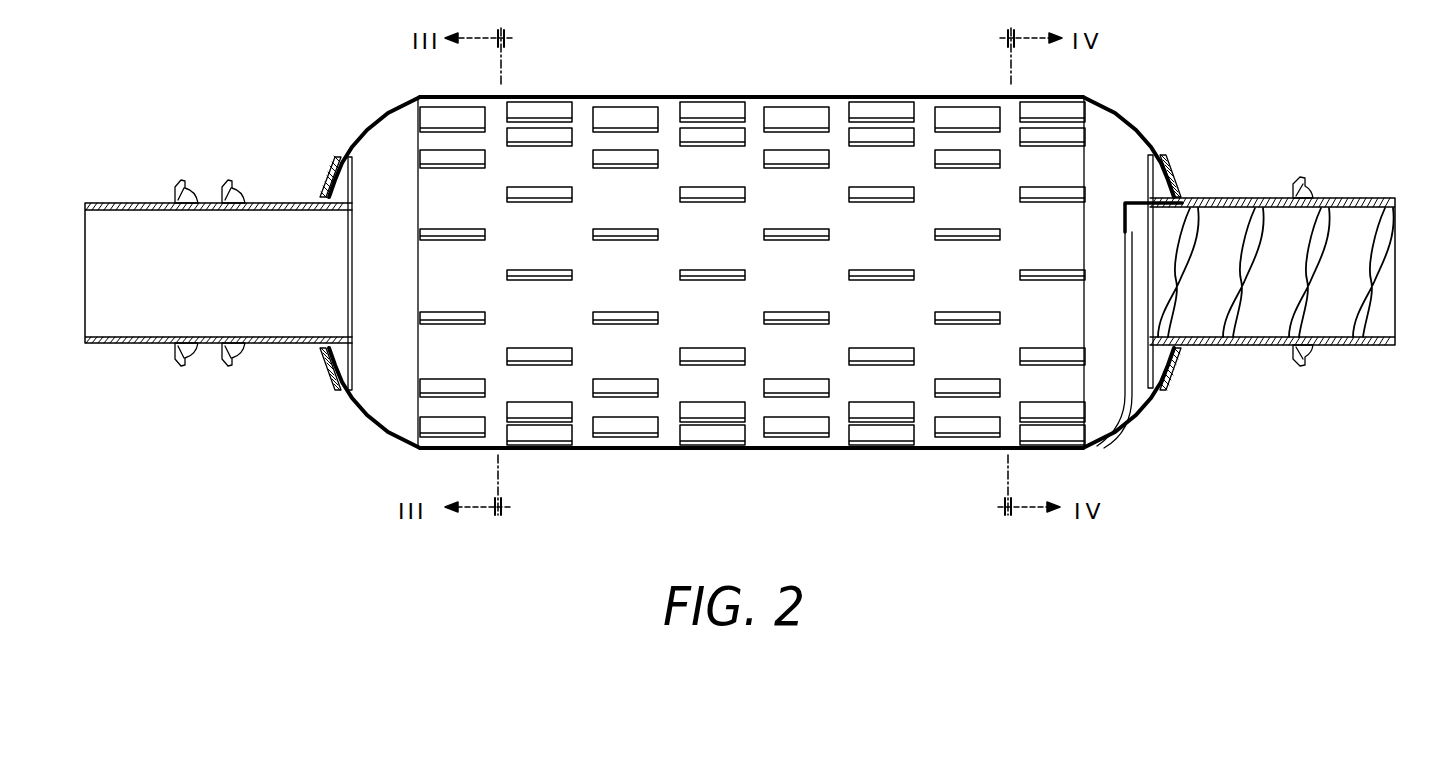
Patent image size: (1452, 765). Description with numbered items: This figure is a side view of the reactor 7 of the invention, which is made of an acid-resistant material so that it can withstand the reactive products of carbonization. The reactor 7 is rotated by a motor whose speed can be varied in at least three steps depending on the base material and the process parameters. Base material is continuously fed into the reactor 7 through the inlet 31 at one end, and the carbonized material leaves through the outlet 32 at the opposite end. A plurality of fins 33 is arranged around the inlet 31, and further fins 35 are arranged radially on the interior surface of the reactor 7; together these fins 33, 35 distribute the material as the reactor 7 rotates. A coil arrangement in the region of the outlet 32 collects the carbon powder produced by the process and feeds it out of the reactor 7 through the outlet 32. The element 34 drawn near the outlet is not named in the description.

The reactor 7 is at (682, 84).
The inlet 31 is at (92, 237).
The outlet 32 is at (1387, 255).
The fins 33 is at (348, 173).
The outlet baffle partition 34 is at (1116, 388).
The fins 35 is at (948, 115).